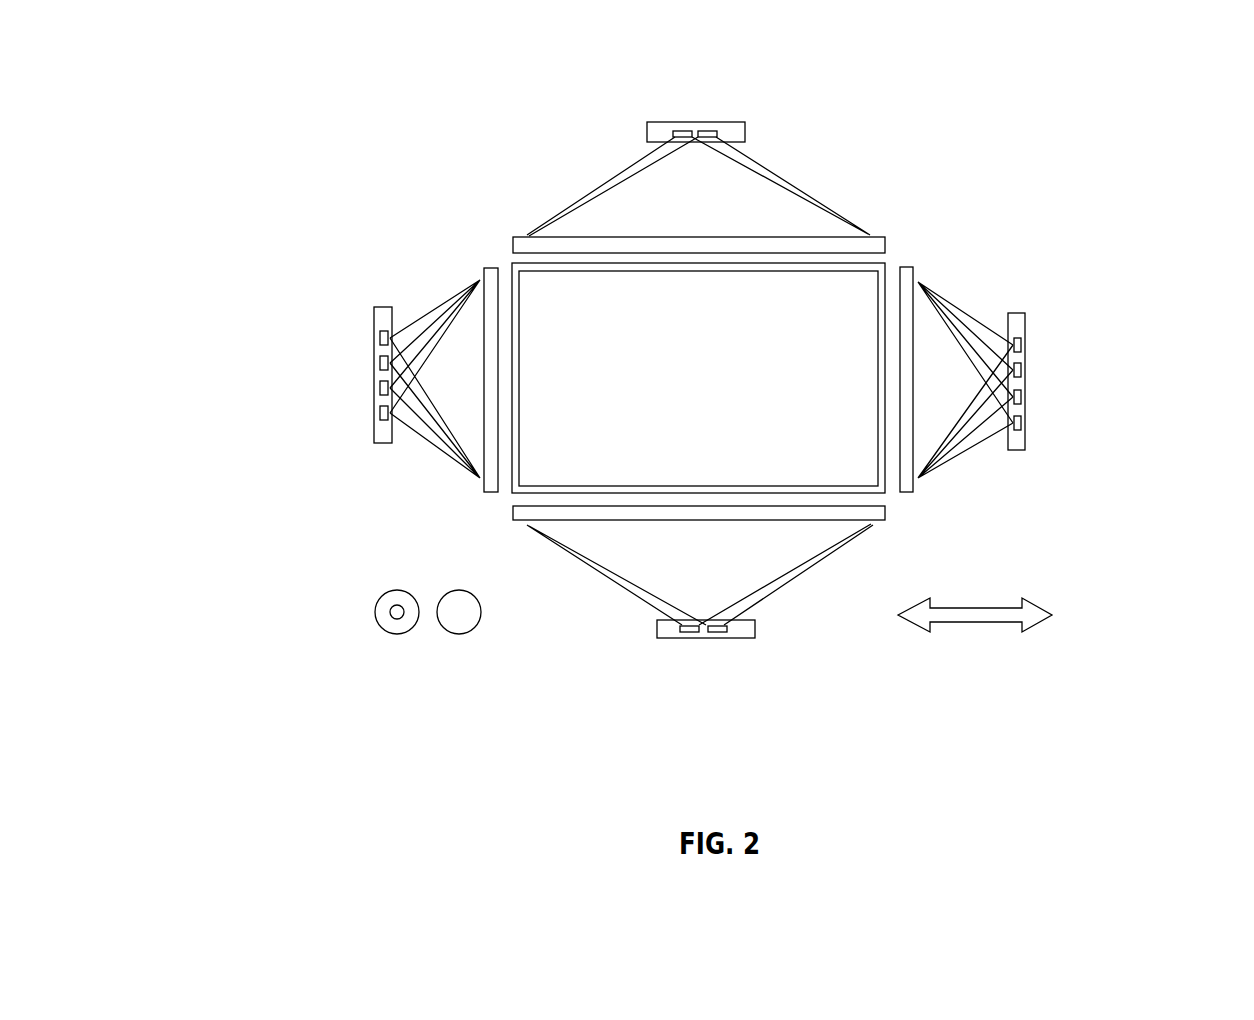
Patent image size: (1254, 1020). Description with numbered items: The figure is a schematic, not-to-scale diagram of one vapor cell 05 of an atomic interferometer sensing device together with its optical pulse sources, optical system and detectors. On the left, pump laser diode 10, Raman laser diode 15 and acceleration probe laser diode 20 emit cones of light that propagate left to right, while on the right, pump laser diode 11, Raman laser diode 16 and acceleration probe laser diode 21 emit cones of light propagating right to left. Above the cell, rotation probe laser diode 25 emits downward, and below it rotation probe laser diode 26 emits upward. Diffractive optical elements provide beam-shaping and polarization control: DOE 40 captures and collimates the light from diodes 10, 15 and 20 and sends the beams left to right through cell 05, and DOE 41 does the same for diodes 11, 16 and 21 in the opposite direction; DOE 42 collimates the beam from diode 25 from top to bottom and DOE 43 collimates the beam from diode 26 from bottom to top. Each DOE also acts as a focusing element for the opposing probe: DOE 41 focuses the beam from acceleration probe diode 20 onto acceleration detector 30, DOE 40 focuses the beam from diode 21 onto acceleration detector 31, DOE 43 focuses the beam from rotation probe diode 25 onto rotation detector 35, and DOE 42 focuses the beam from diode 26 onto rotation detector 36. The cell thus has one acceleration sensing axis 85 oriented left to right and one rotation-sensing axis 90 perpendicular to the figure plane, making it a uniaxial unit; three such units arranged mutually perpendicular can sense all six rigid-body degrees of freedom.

The vapor cell 05 is at (756, 351).
The pump laser diode 10 is at (303, 391).
The pump laser diode 11 is at (1099, 376).
The Raman laser diode 15 is at (290, 364).
The Raman laser diode 16 is at (1110, 403).
The acceleration probe laser diode 20 is at (250, 413).
The acceleration probe laser diode 21 is at (1150, 428).
The rotation probe laser diode 25 is at (648, 98).
The rotation probe laser diode 26 is at (645, 667).
The acceleration detector 30 is at (1150, 342).
The acceleration detector 31 is at (248, 337).
The rotation detector 35 is at (770, 667).
The rotation detector 36 is at (727, 98).
The diffractive optical element 40 is at (483, 492).
The diffractive optical element 41 is at (914, 272).
The diffractive optical element 42 is at (885, 237).
The diffractive optical element 43 is at (517, 521).
The acceleration sensing axis 85 is at (990, 675).
The rotation-sensing axis 90 is at (441, 675).